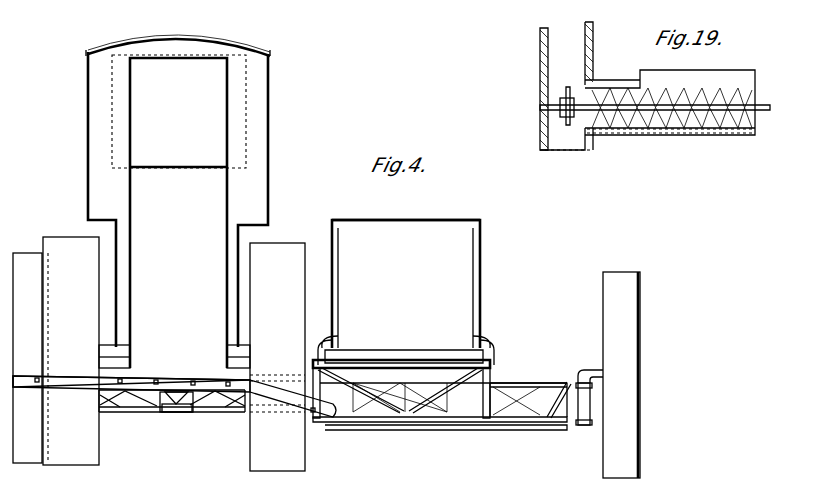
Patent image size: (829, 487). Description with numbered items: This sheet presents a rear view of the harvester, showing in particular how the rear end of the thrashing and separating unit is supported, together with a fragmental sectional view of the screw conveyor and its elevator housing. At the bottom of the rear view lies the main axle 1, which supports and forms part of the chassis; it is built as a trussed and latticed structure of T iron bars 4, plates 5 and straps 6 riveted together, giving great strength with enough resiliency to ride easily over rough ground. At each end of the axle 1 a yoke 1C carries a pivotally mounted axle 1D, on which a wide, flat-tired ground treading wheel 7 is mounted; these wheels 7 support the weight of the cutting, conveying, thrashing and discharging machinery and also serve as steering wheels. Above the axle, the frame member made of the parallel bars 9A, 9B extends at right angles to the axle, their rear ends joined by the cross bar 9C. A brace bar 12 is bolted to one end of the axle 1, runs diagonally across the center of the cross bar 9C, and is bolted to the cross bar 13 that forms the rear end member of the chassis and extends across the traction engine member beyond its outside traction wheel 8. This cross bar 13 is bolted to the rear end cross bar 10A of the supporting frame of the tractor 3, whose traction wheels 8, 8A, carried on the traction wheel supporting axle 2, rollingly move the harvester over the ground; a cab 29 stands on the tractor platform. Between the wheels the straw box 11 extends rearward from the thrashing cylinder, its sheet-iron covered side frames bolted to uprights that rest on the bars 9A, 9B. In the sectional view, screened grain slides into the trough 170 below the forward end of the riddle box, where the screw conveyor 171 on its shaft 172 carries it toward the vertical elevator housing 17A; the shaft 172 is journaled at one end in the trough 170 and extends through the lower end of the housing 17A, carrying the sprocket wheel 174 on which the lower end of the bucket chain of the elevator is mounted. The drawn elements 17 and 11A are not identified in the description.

In FIG. 4, the tractor 3 is at (164, 191).
In FIG. 4, the cab 29 is at (179, 211).
In FIG. 4, the traction wheel supporting axle 2 is at (112, 351).
In FIG. 4, the wheels 7 is at (26, 262).
In FIG. 4, the traction wheel 8 is at (71, 351).
In FIG. 4, the traction wheel 8A is at (277, 357).
In FIG. 4, the rear end cross bar 10A is at (178, 374).
In FIG. 4, the cross bar 13 is at (292, 406).
In FIG. 4, the main axle 1 is at (228, 413).
In FIG. 4, the straps 6 is at (140, 405).
In FIG. 4, the mechanism 17 is at (193, 408).
In FIG. 4, the straw box 11 is at (410, 262).
In FIG. 4, the container wall 11A is at (481, 300).
In FIG. 4, the bar 9A is at (330, 355).
In FIG. 4, the bar 9B is at (483, 356).
In FIG. 4, the brace bar 12 is at (392, 424).
In FIG. 4, the plates 5 is at (345, 422).
In FIG. 4, the cross bar 9C is at (420, 416).
In FIG. 4, the T iron bars 4 is at (508, 385).
In FIG. 4, the yokes 1C is at (592, 402).
In FIG. 4, the pivotally mounted axles 1D is at (598, 369).
In FIG. 19, the vertical elevator housing 17A is at (568, 27).
In FIG. 19, the trough 170 is at (680, 131).
In FIG. 19, the screw conveyor 171 is at (638, 130).
In FIG. 19, the shaft 172 is at (758, 107).
In FIG. 19, the sprocket wheel 174 is at (560, 94).